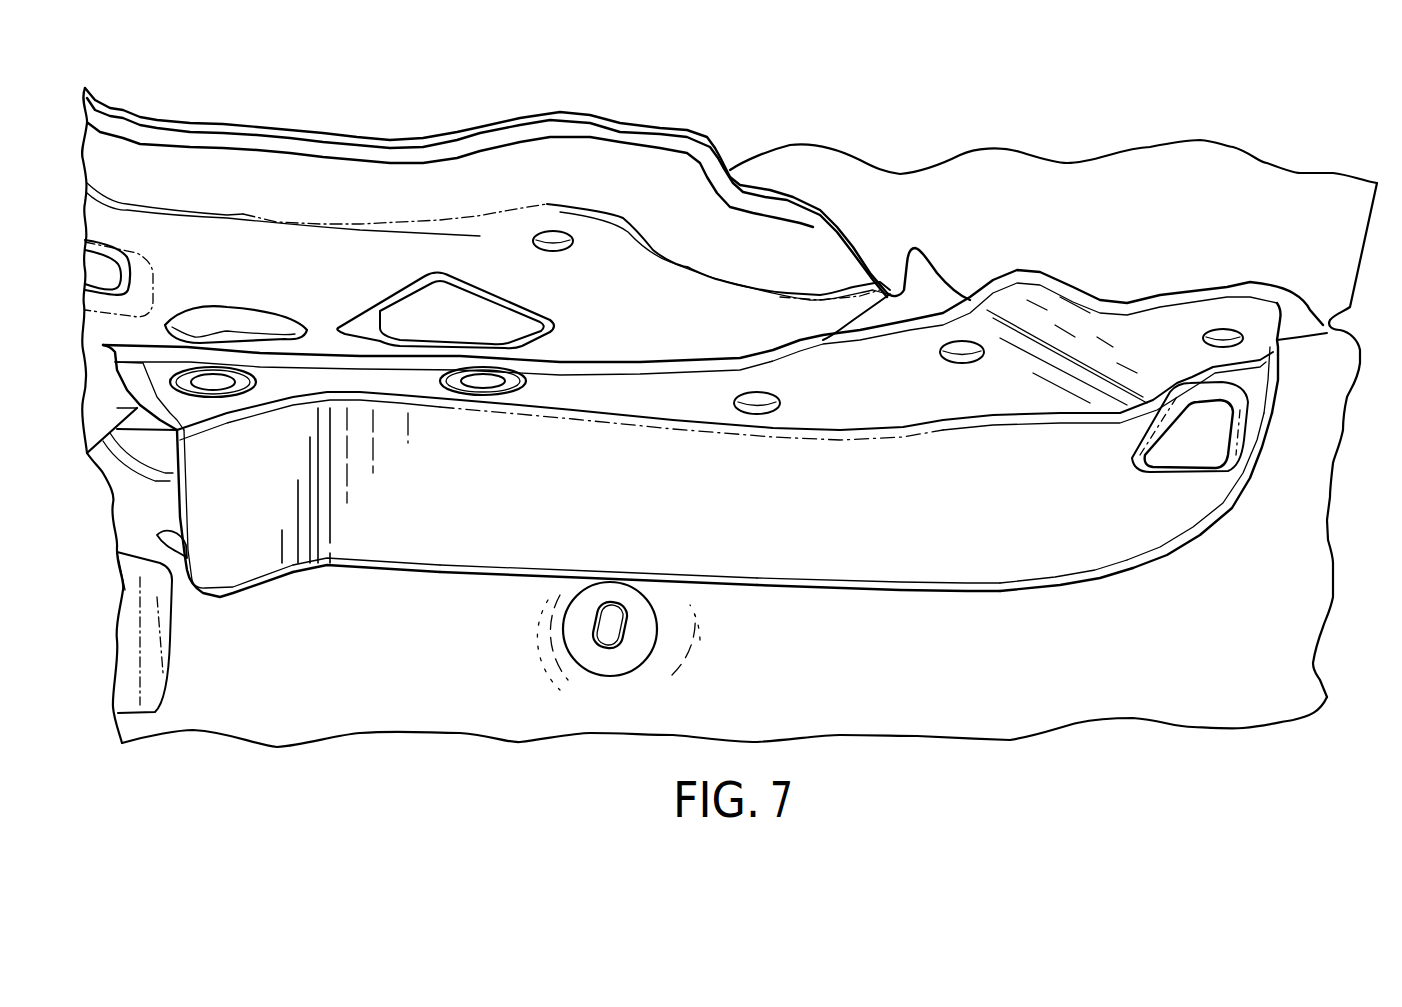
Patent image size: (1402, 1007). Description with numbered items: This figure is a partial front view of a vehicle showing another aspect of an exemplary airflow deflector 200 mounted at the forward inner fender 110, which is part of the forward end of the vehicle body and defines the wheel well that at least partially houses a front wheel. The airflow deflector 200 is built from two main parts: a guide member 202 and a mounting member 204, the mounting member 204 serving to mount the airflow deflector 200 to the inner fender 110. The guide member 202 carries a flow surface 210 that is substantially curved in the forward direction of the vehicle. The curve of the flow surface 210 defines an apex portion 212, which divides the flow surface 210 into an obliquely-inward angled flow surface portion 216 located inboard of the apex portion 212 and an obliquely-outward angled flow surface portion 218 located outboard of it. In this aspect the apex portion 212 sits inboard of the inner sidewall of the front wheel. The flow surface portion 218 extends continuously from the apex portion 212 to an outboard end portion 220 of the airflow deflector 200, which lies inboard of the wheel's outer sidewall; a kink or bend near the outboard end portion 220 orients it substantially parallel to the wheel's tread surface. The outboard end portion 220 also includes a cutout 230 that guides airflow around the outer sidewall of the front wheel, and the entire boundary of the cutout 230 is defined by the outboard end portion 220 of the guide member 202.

The forward inner fender 110 is at (637, 180).
The airflow deflector 200 is at (713, 459).
The guide member 202 is at (768, 552).
The mounting member 204 is at (923, 347).
The flow surface 210 is at (897, 560).
The apex portion 212 is at (330, 550).
The obliquely-inward angled flow surface portion 216 is at (220, 555).
The obliquely-outward angled flow surface portion 218 is at (997, 560).
The outboard end portion 220 is at (1177, 513).
The cutout 230 is at (1163, 468).